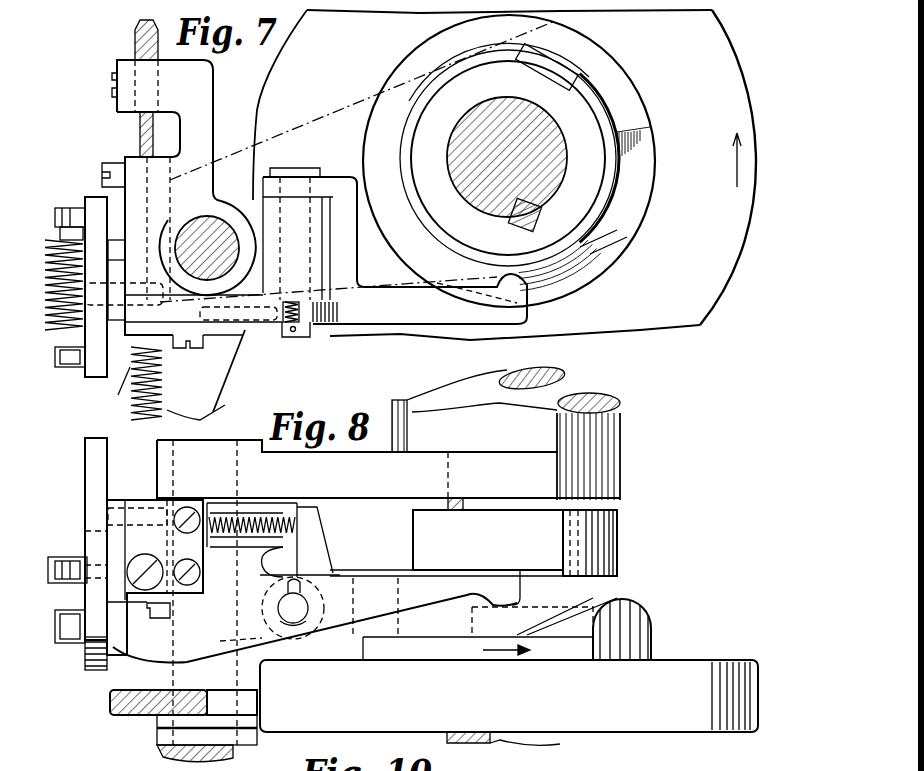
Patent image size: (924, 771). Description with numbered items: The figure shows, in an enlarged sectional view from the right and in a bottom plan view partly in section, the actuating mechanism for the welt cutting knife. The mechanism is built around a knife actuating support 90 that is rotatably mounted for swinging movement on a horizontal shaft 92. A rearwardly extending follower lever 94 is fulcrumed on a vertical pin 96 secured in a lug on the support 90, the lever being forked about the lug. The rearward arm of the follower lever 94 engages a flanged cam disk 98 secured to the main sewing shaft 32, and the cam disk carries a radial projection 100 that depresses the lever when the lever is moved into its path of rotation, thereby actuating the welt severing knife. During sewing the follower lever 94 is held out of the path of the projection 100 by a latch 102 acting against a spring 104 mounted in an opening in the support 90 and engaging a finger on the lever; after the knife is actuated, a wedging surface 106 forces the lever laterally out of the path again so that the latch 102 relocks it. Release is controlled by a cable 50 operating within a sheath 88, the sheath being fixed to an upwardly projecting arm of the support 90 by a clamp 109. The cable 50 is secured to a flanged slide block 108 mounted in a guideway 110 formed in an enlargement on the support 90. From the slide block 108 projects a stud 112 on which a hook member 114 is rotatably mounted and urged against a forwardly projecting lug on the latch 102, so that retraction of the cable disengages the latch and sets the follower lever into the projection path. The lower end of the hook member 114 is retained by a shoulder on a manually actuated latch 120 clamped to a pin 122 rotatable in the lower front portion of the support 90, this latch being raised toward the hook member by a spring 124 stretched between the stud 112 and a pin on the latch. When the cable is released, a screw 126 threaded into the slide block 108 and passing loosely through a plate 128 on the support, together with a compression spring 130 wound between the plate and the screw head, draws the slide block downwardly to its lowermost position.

In FIG. 7, the main sewing shaft 32 is at (508, 158).
In FIG. 8, the main sewing shaft 32 is at (506, 429).
In FIG. 7, the cable 50 is at (120, 108).
In FIG. 7, the sheath 88 is at (123, 40).
In FIG. 7, the knife actuating support 90 is at (437, 215).
In FIG. 8, the knife actuating support 90 is at (167, 726).
In FIG. 7, the horizontal shaft 92 is at (208, 237).
In FIG. 8, the horizontal shaft 92 is at (509, 702).
In FIG. 8, the follower lever 94 is at (388, 522).
In FIG. 7, the vertical pin 96 is at (314, 218).
In FIG. 8, the vertical pin 96 is at (302, 619).
In FIG. 7, the flanged cam disk 98 is at (514, 161).
In FIG. 8, the flanged cam disk 98 is at (628, 543).
In FIG. 7, the radial projection 100 is at (536, 67).
In FIG. 8, the radial projection 100 is at (531, 629).
In FIG. 7, the latch 102 is at (85, 280).
In FIG. 8, the latch 102 is at (155, 559).
In FIG. 7, the spring 104 is at (302, 337).
In FIG. 8, the spring 104 is at (274, 500).
In FIG. 7, the wedging surface 106 is at (546, 170).
In FIG. 8, the wedging surface 106 is at (643, 620).
In FIG. 7, the flanged slide block 108 is at (192, 223).
In FIG. 8, the flanged slide block 108 is at (315, 628).
In FIG. 7, the clamp 109 is at (140, 81).
In FIG. 8, the guideway 110 is at (80, 603).
In FIG. 7, the stud 112 is at (49, 211).
In FIG. 7, the hook member 114 is at (54, 235).
In FIG. 8, the manually actuated latch 120 is at (73, 539).
In FIG. 8, the pin 122 is at (60, 640).
In FIG. 7, the spring 124 is at (45, 285).
In FIG. 8, the spring 124 is at (47, 573).
In FIG. 7, the screw 126 is at (142, 399).
In FIG. 8, the screw 126 is at (98, 550).
In FIG. 7, the plate 128 is at (204, 349).
In FIG. 8, the plate 128 is at (180, 610).
In FIG. 7, the compression spring 130 is at (169, 365).